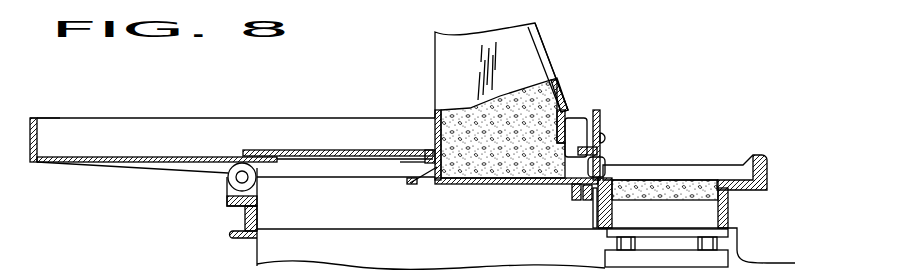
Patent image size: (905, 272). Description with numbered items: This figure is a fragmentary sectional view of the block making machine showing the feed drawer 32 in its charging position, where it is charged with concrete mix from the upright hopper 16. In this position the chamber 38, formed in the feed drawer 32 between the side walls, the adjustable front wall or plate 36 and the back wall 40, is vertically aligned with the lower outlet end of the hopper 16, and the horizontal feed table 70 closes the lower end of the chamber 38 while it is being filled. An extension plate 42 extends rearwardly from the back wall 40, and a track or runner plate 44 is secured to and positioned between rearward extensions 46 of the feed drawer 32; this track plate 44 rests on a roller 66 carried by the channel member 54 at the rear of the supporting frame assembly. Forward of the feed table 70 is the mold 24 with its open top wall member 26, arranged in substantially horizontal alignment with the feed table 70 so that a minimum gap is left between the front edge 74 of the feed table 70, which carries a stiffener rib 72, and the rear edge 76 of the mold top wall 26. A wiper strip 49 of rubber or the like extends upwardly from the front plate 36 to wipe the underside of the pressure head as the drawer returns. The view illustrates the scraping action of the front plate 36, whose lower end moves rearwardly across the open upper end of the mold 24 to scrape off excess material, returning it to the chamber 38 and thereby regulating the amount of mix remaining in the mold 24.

The hopper 16 is at (518, 38).
The mold 24 is at (668, 223).
The open top wall member 26 is at (732, 186).
The feed drawer 32 is at (275, 128).
The front wall or plate 36 is at (603, 162).
The chamber 38 is at (477, 165).
The back wall 40 is at (433, 166).
The extension plate 42 is at (350, 150).
The track or runner plate 44 is at (145, 160).
The rearward extensions 46 is at (58, 128).
The wiper strip 49 is at (601, 118).
The channel member 54 is at (230, 239).
The roller 66 is at (229, 178).
The feed table 70 is at (528, 185).
The stiffener rib 72 is at (579, 187).
The front edge 74 is at (581, 183).
The rear edge 76 is at (594, 193).